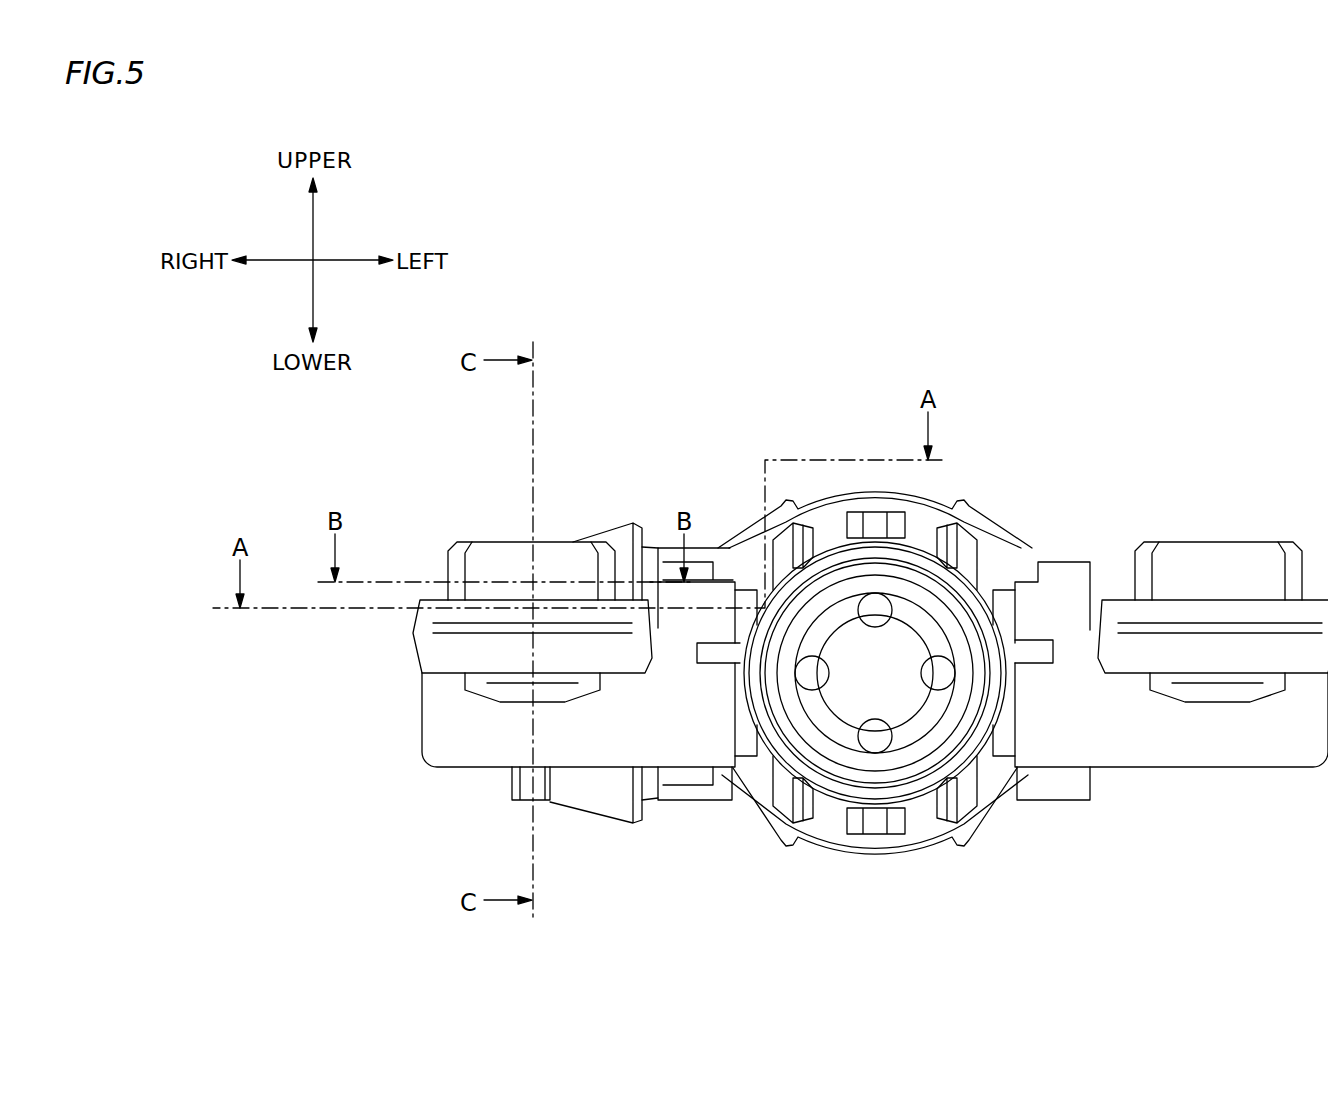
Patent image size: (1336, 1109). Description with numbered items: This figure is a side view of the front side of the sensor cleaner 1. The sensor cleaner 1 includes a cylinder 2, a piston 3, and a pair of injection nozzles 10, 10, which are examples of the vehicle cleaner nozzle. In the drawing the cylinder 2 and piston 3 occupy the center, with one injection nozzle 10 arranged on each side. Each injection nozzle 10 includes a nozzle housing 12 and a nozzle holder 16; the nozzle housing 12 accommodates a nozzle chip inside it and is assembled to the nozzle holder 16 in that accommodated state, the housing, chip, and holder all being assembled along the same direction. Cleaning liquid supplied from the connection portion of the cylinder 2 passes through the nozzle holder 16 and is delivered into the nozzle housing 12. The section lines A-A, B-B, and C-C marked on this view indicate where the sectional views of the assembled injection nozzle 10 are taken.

The sensor cleaner 1 is at (1001, 266).
The cylinder 2 is at (827, 847).
The piston 3 is at (905, 765).
The injection nozzle 10 is at (471, 502).
The nozzle housing 12 is at (565, 557).
The nozzle holder 16 is at (447, 727).